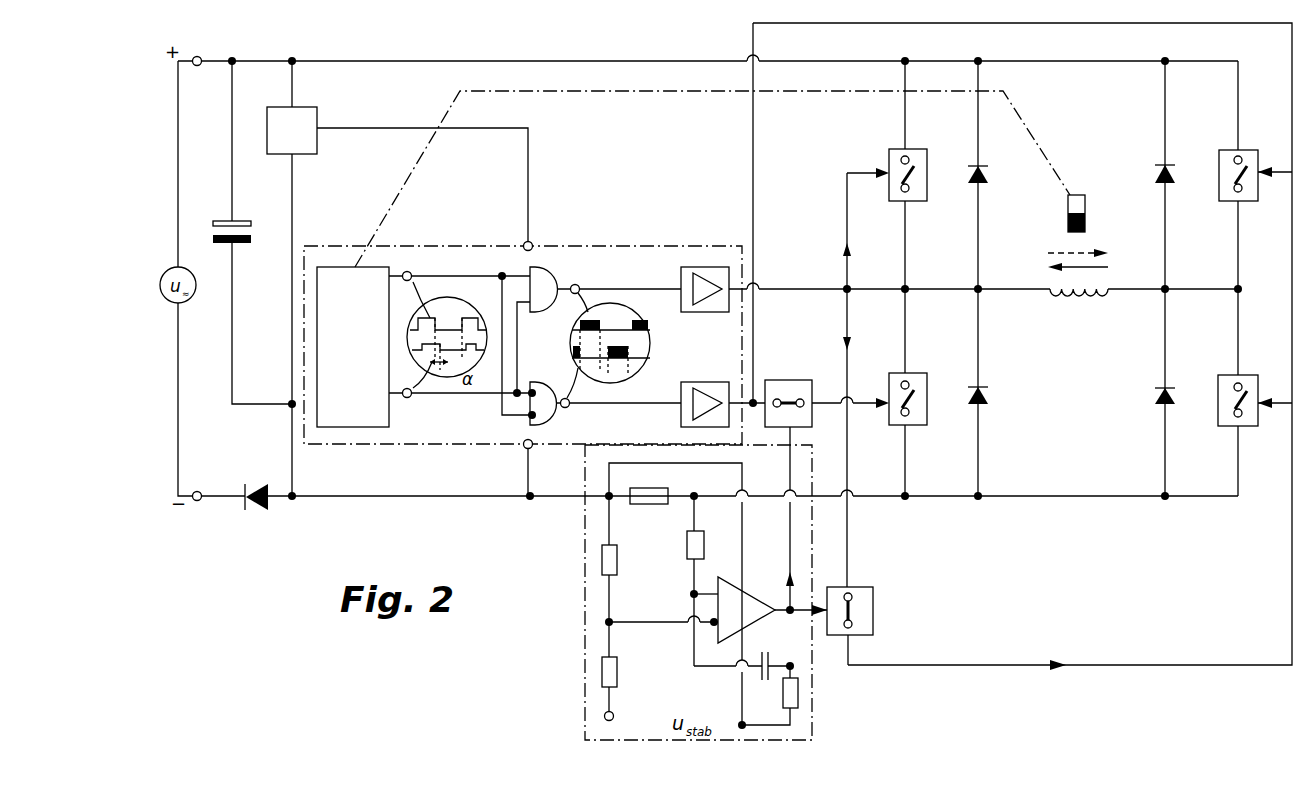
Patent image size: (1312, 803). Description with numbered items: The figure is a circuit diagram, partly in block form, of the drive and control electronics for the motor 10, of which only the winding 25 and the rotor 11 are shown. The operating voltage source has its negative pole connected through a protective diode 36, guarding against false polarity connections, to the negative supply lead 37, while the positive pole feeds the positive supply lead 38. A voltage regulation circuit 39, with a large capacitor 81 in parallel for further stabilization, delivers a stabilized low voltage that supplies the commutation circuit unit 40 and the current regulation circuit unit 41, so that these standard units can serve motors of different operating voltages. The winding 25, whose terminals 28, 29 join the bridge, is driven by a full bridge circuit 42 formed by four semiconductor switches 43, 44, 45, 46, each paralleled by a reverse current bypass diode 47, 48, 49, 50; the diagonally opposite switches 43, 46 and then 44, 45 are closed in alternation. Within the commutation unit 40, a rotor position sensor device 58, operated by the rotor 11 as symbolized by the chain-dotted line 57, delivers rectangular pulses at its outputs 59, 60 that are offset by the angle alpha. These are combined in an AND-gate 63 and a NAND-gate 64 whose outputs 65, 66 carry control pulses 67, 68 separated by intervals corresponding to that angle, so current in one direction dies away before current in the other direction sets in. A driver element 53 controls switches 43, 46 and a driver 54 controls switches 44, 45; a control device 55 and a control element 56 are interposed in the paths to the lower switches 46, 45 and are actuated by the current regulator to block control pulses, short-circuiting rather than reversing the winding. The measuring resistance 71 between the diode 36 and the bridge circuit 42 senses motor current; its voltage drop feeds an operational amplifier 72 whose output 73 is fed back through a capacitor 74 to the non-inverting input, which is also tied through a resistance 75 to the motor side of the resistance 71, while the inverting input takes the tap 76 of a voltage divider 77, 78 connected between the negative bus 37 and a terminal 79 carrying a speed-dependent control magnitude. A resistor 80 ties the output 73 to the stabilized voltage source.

The motor 10 is at (1131, 224).
The rotor 11 is at (1085, 205).
The winding 25 is at (1082, 296).
The motor terminal 28 is at (980, 289).
The motor terminal 29 is at (1168, 289).
The protective diode 36 is at (258, 512).
The negative supply lead 37 is at (368, 496).
The positive supply lead 38 is at (565, 61).
The voltage regulation circuit 39 is at (305, 107).
The commutation circuit unit 40 is at (607, 243).
The current regulation circuit unit 41 is at (585, 585).
The full bridge circuit 42 is at (1055, 85).
The semiconductor switch 43 is at (927, 175).
The semiconductor switch 44 is at (1221, 166).
The semiconductor switch 45 is at (915, 378).
The semiconductor switch 46 is at (1218, 390).
The reverse current bypass diode 47 is at (988, 173).
The reverse current bypass diode 48 is at (1155, 172).
The reverse current bypass diode 49 is at (988, 394).
The reverse current bypass diode 50 is at (1155, 395).
The driver element 53 is at (715, 312).
The driver 54 is at (690, 382).
The control device 55 is at (873, 605).
The control element 56 is at (795, 380).
The chain-dotted line 57 is at (655, 92).
The rotor position sensor device 58 is at (359, 347).
The output 59 is at (432, 276).
The output 60 is at (428, 393).
The AND-gate 63 is at (550, 272).
The NAND-gate 64 is at (548, 394).
The output 65 is at (608, 289).
The output 66 is at (622, 403).
The control pulses 67 is at (605, 320).
The control pulses 68 is at (586, 350).
The measuring resistance 71 is at (650, 488).
The operational amplifier 72 is at (752, 603).
The output 73 is at (800, 616).
The capacitor 74 is at (765, 650).
The resistance 75 is at (687, 541).
The tap 76 is at (620, 622).
The voltage divider resistor 77 is at (617, 562).
The voltage divider resistor 78 is at (617, 672).
The terminal 79 is at (615, 712).
The resistor 80 is at (783, 693).
The capacitor 81 is at (248, 232).